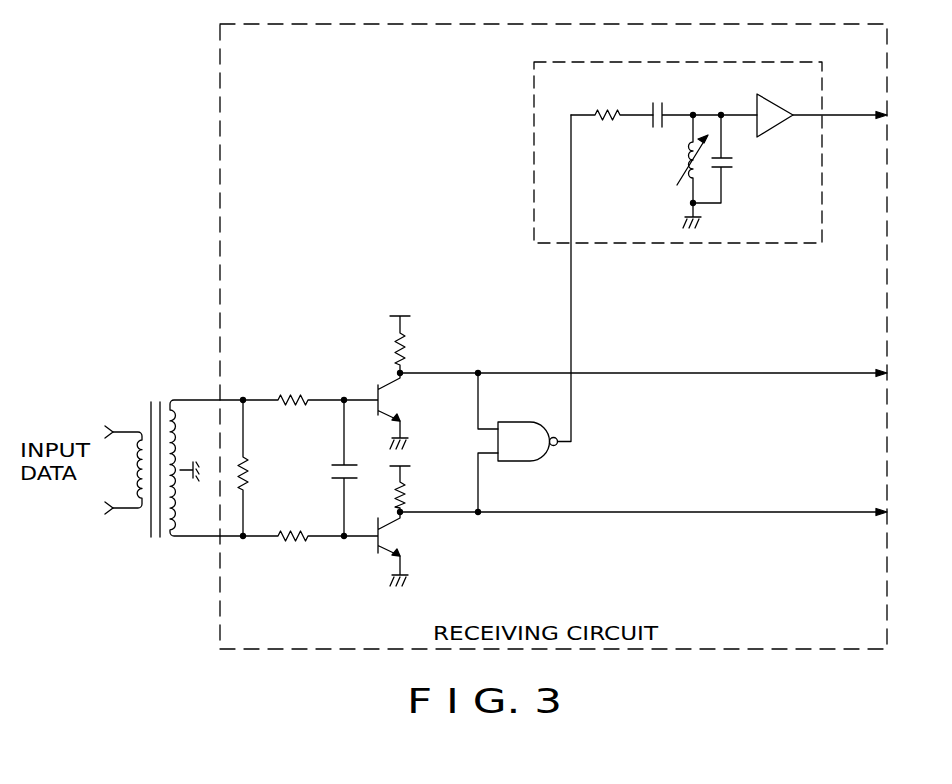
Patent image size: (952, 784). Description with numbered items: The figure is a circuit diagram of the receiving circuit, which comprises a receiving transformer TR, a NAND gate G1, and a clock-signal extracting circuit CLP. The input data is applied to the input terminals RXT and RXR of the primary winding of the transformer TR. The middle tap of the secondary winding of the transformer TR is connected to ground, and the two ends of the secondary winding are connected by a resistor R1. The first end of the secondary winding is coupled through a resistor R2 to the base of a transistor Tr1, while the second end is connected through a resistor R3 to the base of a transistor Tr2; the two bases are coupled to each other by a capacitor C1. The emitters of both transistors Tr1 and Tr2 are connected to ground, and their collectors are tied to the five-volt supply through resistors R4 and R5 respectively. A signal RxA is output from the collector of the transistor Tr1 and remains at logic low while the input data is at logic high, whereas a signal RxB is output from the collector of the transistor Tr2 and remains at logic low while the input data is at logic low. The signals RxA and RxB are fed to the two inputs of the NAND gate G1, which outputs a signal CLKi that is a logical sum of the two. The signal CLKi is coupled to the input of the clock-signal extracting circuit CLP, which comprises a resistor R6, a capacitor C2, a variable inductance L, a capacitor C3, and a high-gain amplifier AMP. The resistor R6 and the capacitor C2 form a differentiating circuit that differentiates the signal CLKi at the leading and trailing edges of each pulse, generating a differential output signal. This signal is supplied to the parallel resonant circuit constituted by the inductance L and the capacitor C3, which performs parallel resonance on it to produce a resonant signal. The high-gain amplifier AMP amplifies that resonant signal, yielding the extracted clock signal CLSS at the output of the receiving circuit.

The receiving transformer TR is at (162, 540).
The input terminal RxT RXT is at (110, 421).
The input terminal RxR RXR is at (110, 497).
The resistor R1 is at (259, 468).
The resistor R2 is at (293, 386).
The resistor R3 is at (293, 525).
The capacitor C1 is at (335, 468).
The transistor Tr1 is at (388, 411).
The transistor Tr2 is at (388, 549).
The resistor R4 is at (425, 342).
The resistor R5 is at (425, 485).
The signal RxA is at (671, 373).
The signal RxB is at (671, 513).
The NAND gate G1 is at (524, 421).
The signal CLKi is at (593, 284).
The clock-signal extracting circuit CLP is at (534, 196).
The resistor R6 is at (612, 101).
The capacitor C2 is at (670, 105).
The variable inductance L is at (686, 171).
The capacitor C3 is at (728, 158).
The high-gain amplifier AMP is at (782, 137).
The extracted clock signal CLKs CLSS is at (871, 117).